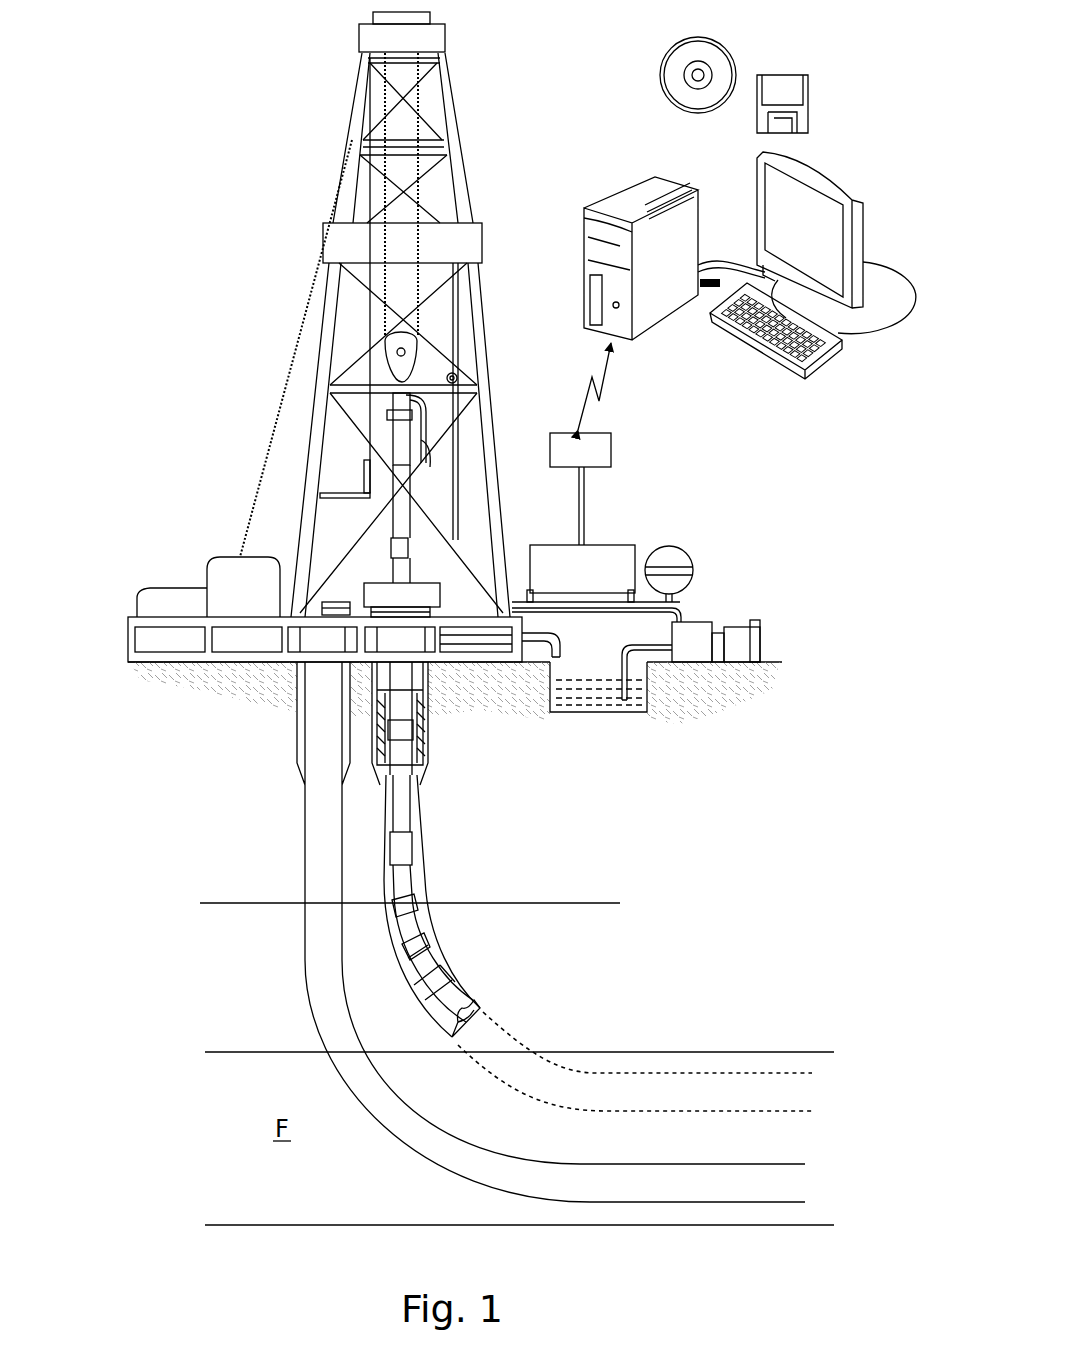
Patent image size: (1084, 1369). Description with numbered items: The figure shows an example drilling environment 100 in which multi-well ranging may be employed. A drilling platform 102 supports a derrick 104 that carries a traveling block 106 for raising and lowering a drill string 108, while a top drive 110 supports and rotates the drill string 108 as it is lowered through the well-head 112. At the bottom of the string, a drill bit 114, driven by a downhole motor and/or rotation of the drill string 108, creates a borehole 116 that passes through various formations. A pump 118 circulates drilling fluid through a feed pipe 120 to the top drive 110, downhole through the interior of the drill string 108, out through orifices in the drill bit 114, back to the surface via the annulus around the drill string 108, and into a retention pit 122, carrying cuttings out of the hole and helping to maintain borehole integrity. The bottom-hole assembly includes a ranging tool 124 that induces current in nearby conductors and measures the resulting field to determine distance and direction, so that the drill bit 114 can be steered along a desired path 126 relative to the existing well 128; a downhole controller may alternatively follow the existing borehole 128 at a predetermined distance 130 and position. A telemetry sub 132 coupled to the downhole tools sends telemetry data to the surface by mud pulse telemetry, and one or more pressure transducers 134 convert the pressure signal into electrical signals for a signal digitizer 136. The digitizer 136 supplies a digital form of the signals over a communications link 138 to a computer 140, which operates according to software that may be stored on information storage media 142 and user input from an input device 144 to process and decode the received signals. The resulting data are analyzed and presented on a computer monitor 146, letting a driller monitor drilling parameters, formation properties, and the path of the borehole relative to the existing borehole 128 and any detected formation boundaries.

The drilling environment 100 is at (226, 158).
The drilling platform 102 is at (128, 638).
The derrick 104 is at (453, 143).
The traveling block 106 is at (420, 358).
The drill string 108 is at (408, 812).
The top drive 110 is at (402, 440).
The well-head 112 is at (377, 580).
The drill bit 114 is at (477, 1010).
The borehole 116 is at (421, 876).
The pump 118 is at (693, 628).
The feed pipe 120 is at (642, 612).
The retention pit 122 is at (590, 702).
The ranging tool 124 is at (447, 982).
The desired path 126 is at (596, 1072).
The existing well 128 is at (437, 1168).
The predetermined distance 130 is at (738, 1113).
The telemetry sub 132 is at (438, 948).
The pressure transducers 134 is at (630, 598).
The signal digitizer 136 is at (580, 489).
The communications link 138 is at (610, 386).
The computer 140 is at (731, 259).
The information storage media 142 is at (738, 55).
The input device 144 is at (773, 355).
The computer monitor 146 is at (836, 243).